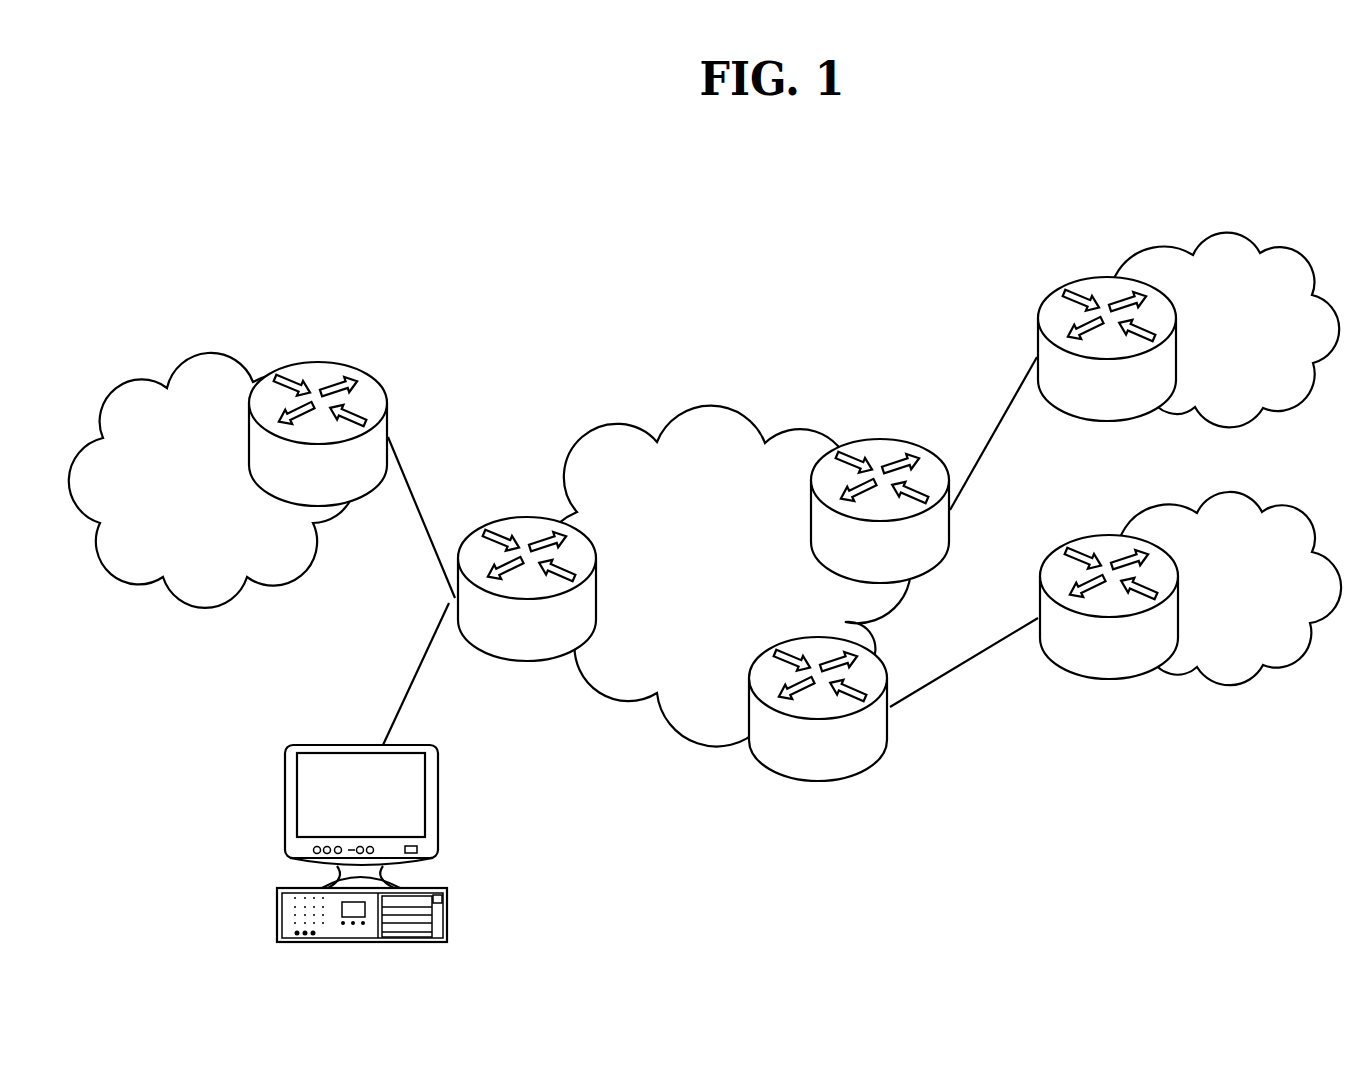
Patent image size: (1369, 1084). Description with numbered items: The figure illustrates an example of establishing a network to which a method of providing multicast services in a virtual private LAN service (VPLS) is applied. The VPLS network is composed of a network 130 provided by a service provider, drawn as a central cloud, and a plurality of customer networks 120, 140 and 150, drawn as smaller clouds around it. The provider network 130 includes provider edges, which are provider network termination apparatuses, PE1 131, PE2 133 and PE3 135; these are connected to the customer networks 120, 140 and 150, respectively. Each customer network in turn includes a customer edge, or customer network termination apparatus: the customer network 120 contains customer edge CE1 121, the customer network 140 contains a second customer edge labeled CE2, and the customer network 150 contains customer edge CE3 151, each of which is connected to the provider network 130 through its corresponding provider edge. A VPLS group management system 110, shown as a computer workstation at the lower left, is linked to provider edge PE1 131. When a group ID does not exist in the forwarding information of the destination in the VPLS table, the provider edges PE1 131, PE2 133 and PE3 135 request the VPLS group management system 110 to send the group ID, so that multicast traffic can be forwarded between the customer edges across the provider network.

The VPLS group management system 110 is at (295, 774).
The customer network 120 is at (192, 358).
The customer edge CE1 121 is at (318, 360).
The network provided by the service provider 130 is at (688, 402).
The provider edge PE1 131 is at (508, 517).
The provider edge PE2 133 is at (882, 438).
The provider edge PE3 135 is at (823, 783).
The customer network 140 is at (1153, 253).
The customer network 150 is at (1232, 689).
The customer edge CE3 151 is at (1105, 680).